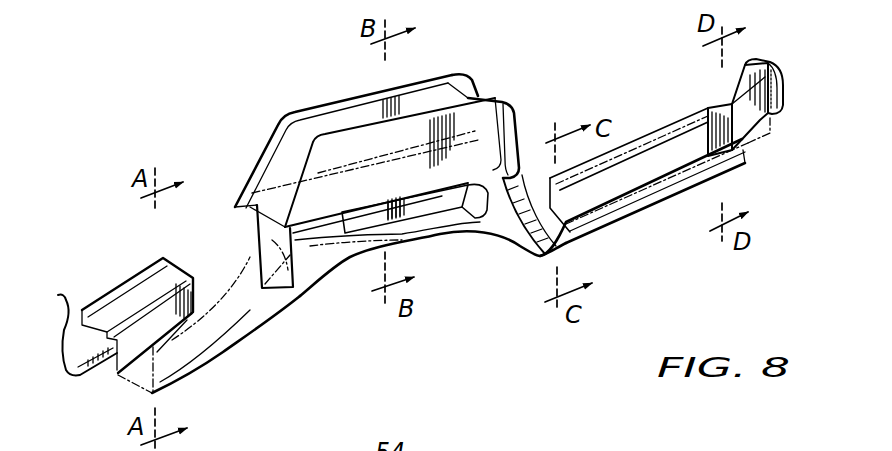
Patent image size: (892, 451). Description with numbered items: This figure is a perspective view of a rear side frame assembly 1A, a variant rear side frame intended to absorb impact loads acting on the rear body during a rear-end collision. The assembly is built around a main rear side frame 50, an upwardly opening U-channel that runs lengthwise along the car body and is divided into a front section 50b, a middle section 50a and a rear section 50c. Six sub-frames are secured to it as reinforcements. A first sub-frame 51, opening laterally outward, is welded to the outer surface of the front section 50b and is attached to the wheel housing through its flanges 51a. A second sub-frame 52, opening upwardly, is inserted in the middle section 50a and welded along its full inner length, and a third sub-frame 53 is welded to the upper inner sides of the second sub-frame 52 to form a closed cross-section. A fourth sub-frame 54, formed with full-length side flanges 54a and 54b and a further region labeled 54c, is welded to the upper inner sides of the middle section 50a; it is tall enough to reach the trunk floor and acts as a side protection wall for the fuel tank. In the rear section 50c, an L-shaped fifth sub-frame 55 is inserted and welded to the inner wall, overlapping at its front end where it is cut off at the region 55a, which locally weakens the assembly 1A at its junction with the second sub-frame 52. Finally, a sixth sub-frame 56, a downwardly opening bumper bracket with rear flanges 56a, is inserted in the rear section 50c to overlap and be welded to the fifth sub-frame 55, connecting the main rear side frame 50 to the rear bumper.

The rear side frame assembly 1A is at (160, 130).
The main rear side frame 50 is at (290, 314).
The middle section 50a is at (384, 224).
The front section 50b is at (217, 343).
The rear section 50c is at (627, 203).
The first sub-frame 51 is at (128, 275).
The flanges 51a is at (60, 296).
The second sub-frame 52 is at (252, 242).
The third sub-frame 53 is at (433, 214).
The fourth sub-frame 54 is at (275, 110).
The side flanges 54a is at (520, 115).
The side flanges 54b is at (456, 86).
The curved surface of frame 54c is at (420, 118).
The fifth sub-frame 55 is at (636, 148).
The cut-off portion 55a is at (548, 193).
The sixth sub-frame 56 is at (772, 118).
The rear flanges 56a is at (802, 20).